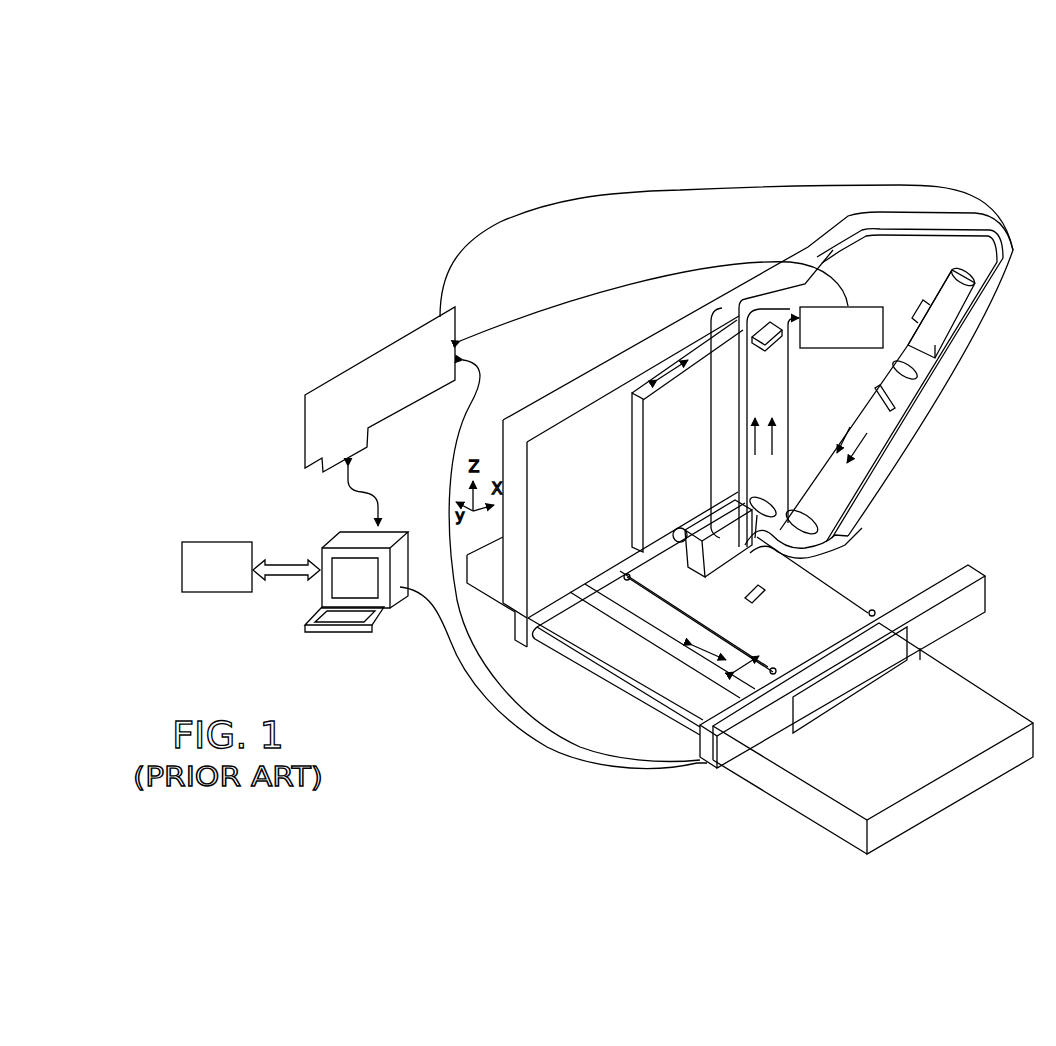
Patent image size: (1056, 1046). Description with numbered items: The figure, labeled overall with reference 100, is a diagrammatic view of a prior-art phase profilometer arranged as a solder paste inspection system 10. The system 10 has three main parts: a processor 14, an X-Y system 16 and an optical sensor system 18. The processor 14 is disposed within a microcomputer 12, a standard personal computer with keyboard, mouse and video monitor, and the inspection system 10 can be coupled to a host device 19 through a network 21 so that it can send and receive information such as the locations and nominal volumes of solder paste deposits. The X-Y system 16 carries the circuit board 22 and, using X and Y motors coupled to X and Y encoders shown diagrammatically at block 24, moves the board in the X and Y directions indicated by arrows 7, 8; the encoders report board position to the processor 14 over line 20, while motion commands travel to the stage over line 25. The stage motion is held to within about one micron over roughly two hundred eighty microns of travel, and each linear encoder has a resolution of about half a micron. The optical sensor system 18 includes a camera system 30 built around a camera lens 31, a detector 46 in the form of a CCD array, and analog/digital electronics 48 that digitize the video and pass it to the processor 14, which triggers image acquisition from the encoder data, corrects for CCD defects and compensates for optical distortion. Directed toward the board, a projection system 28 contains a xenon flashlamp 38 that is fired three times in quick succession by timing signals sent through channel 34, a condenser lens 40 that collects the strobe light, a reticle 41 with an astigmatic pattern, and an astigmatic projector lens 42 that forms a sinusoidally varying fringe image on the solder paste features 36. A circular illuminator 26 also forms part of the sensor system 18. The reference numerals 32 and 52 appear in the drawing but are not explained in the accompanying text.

The laser scanning system 100 is at (812, 130).
The solder paste inspection system 10 is at (434, 652).
The arrow 7 is at (747, 660).
The arrow 8 is at (709, 657).
The microcomputer 12 is at (327, 634).
The processor 14 is at (363, 358).
The X-Y system 16 is at (565, 660).
The optical sensor system 18 is at (890, 220).
The host device 19 is at (227, 541).
The line 20 is at (627, 758).
The network 21 is at (292, 580).
The circuit board 22 is at (865, 608).
The encoders 24 is at (890, 677).
The line 25 is at (477, 682).
The circular illuminator 26 is at (810, 556).
The projection system 28 is at (925, 418).
The camera system 30 is at (712, 448).
The camera lens 31 is at (758, 541).
The encoder marks 32 is at (627, 574).
The channel 34 is at (975, 264).
The solder paste features 36 is at (766, 604).
The flashlamp 38 is at (958, 302).
The condenser lens 40 is at (892, 362).
The reticle 41 is at (880, 394).
The projector lens 42 is at (815, 532).
The detector 46 is at (780, 318).
The A/D electronics 48 is at (860, 306).
The data cable 52 is at (573, 300).